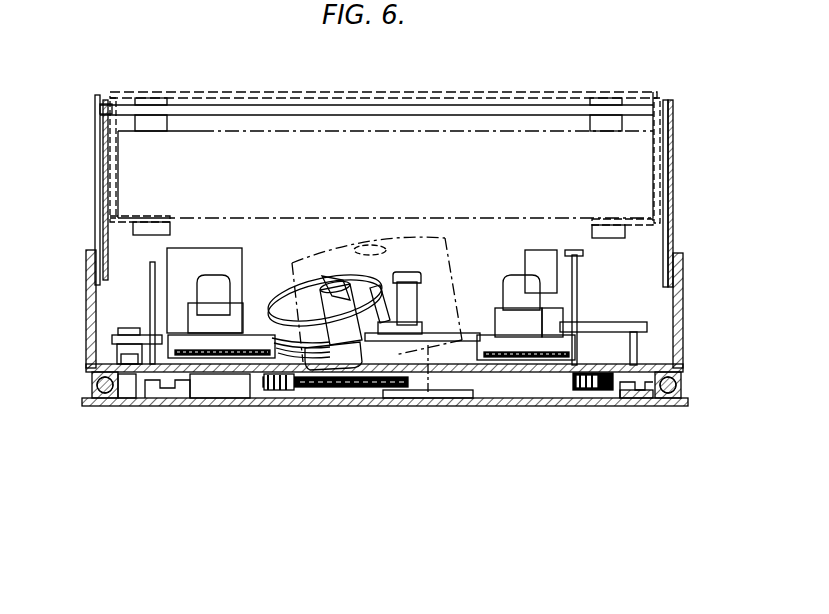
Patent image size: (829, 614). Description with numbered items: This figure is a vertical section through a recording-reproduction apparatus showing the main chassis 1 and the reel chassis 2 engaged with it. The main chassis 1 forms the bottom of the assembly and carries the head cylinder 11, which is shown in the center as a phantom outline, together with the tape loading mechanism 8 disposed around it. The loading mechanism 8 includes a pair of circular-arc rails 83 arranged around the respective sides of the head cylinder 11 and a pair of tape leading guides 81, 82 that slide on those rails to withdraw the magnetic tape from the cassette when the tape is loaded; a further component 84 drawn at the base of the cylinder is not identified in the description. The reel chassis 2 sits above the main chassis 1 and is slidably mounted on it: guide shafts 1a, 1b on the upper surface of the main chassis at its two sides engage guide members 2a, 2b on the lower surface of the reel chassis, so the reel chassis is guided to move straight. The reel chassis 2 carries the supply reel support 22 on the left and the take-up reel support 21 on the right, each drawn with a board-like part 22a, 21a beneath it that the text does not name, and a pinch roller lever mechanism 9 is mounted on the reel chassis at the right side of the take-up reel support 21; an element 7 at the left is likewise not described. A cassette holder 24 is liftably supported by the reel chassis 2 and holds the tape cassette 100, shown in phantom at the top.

The tape cassette 100 is at (335, 94).
The cassette holder 24 is at (673, 180).
The tape loading mechanism 8 is at (430, 256).
The head cylinder 11 is at (462, 262).
The supply reel support 22 is at (222, 298).
The reel motor circuit board 22a is at (252, 358).
The tape leading guide 82 is at (301, 262).
The drum motor 84 is at (272, 335).
The tape leading guide 81 is at (400, 292).
The take-up reel support 21 is at (513, 304).
The reel motor circuit board 21a is at (503, 358).
The circular-arc rails 83 is at (445, 345).
The pinch roller lever mechanism 9 is at (596, 268).
The left side unit 7 is at (128, 293).
The reel chassis 2 is at (643, 364).
The guide member 2a is at (676, 385).
The guide member 2b is at (92, 378).
The main chassis 1 is at (470, 407).
The guide shaft 1a is at (640, 402).
The guide shaft 1b is at (120, 400).